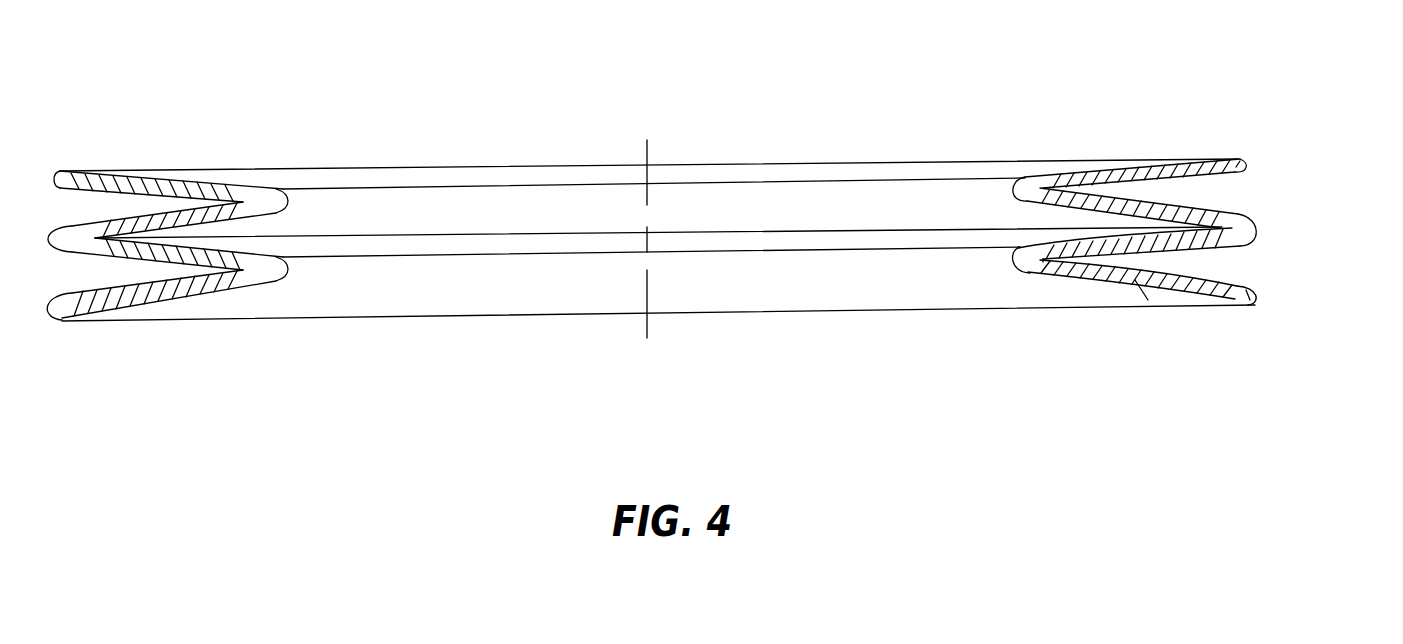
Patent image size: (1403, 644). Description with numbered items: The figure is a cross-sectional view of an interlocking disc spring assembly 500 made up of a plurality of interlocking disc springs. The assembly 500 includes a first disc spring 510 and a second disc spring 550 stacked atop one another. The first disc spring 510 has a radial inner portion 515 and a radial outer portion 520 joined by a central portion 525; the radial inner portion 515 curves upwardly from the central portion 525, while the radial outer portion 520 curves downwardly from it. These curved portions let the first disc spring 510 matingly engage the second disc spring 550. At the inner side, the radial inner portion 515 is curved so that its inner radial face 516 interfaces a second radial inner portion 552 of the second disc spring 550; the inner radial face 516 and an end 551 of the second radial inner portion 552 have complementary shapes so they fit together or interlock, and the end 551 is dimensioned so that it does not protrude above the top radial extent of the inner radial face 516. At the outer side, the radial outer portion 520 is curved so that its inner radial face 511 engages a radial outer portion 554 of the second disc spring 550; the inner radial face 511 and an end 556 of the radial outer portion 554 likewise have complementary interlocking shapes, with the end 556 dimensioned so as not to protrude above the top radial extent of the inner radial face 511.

The interlocking disc spring assembly 500 is at (1108, 392).
The first disc spring 510 is at (1243, 287).
The inner radial face 511 is at (1240, 305).
The radial inner portion 515 is at (1018, 180).
The inner radial face 516 is at (1033, 187).
The radial outer portion 520 is at (1247, 217).
The central portion 525 is at (1135, 280).
The second disc spring 550 is at (1256, 240).
The end 551 is at (1037, 252).
The second radial inner portion 552 is at (1043, 181).
The radial outer portion 554 is at (1233, 162).
The end 556 is at (1237, 160).